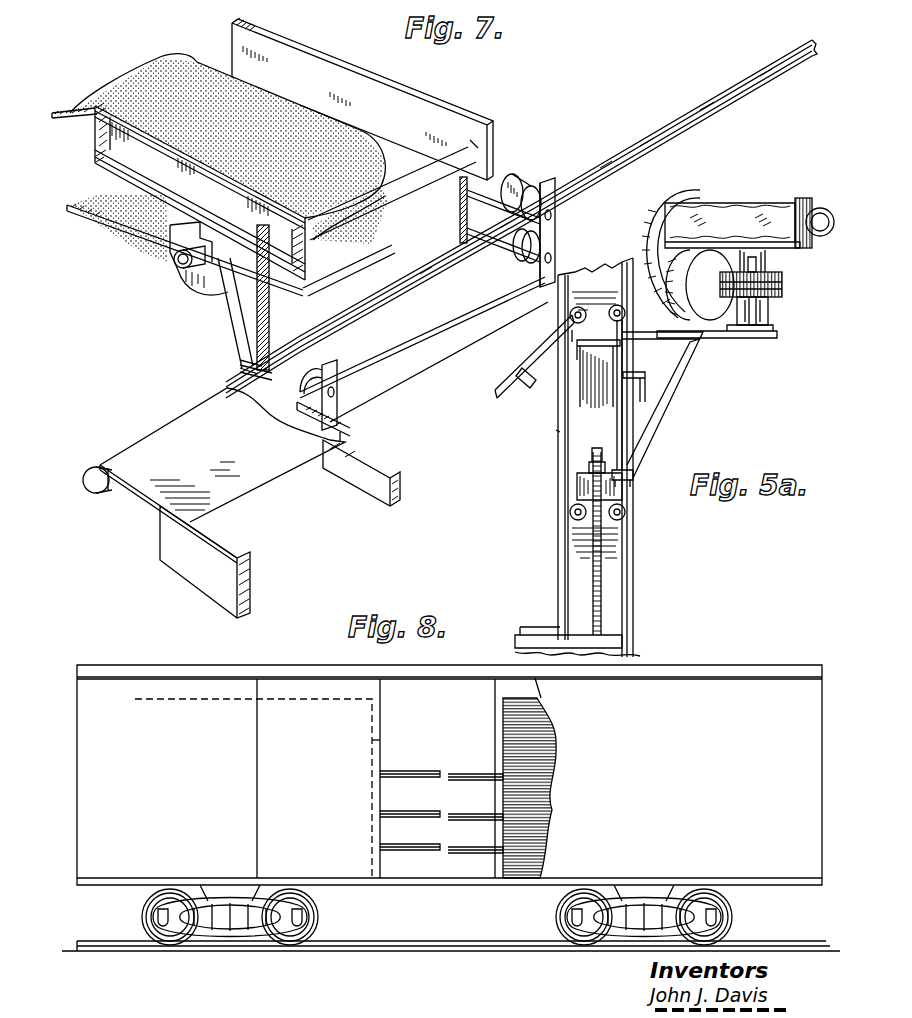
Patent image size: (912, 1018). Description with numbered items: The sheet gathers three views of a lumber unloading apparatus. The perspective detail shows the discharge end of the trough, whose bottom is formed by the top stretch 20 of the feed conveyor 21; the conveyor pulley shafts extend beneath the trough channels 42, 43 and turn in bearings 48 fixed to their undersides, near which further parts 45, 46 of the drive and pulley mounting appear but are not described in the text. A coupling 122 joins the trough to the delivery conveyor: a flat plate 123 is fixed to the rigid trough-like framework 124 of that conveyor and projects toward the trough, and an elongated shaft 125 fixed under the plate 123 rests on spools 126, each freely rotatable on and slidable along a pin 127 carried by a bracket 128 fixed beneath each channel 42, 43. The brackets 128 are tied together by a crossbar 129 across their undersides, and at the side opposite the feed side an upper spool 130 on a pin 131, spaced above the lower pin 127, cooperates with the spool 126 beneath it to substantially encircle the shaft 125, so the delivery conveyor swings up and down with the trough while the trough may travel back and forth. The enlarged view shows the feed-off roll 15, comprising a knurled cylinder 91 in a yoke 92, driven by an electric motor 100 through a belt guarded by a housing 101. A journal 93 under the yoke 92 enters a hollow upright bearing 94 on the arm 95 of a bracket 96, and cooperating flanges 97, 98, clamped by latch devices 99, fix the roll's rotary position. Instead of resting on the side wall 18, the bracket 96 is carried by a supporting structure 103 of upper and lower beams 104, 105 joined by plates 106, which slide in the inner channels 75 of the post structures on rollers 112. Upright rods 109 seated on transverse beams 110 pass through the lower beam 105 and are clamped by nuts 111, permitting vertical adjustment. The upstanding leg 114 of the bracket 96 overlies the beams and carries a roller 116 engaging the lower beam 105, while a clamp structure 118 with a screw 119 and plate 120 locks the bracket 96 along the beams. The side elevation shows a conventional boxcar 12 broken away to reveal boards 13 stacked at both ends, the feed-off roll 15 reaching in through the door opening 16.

In FIG. 8, the boxcar 12 is at (227, 687).
In FIG. 8, the boards 13 is at (370, 716).
In FIG. 5A, the feed-off roll 15 is at (760, 203).
In FIG. 8, the door opening 16 is at (380, 741).
In FIG. 5A, the side wall 18 is at (533, 353).
In FIG. 7, the top stretch 20 is at (192, 80).
In FIG. 7, the feed conveyor 21 is at (153, 100).
In FIG. 7, the channel 42 is at (99, 150).
In FIG. 7, the channel 43 is at (287, 58).
In FIG. 5A, the bracket 45 is at (523, 377).
In FIG. 7, the motor bracket 46 is at (198, 290).
In FIG. 7, the bearings 48 is at (176, 264).
In FIG. 5A, the inner channels 75 is at (623, 590).
In FIG. 5A, the cylinder 91 is at (722, 203).
In FIG. 5A, the yoke 92 is at (813, 200).
In FIG. 5A, the journal 93 is at (768, 267).
In FIG. 5A, the hollow upright bearing 94 is at (762, 317).
In FIG. 5A, the arm 95 is at (720, 339).
In FIG. 5A, the bracket 96 is at (683, 400).
In FIG. 5A, the horizontal flange 97 is at (783, 275).
In FIG. 5A, the horizontal flange 98 is at (783, 288).
In FIG. 5A, the latch devices 99 is at (750, 265).
In FIG. 5A, the electric motor 100 is at (683, 313).
In FIG. 5A, the housing 101 is at (670, 192).
In FIG. 5A, the supporting structure 103 is at (531, 441).
In FIG. 5A, the upper beam 104 is at (598, 373).
In FIG. 5A, the lower beam 105 is at (574, 482).
In FIG. 5A, the plates 106 is at (580, 408).
In FIG. 5A, the upright rods 109 is at (587, 570).
In FIG. 5A, the transverse beams 110 is at (523, 643).
In FIG. 5A, the nuts 111 is at (589, 470).
In FIG. 5A, the rollers 112 is at (570, 314).
In FIG. 5A, the upstanding leg 114 is at (620, 351).
In FIG. 5A, the roller 116 is at (634, 477).
In FIG. 5A, the clamp structure 118 is at (648, 384).
In FIG. 5A, the screw 119 is at (641, 370).
In FIG. 5A, the plate 120 is at (613, 392).
In FIG. 7, the coupling 122 is at (575, 106).
In FIG. 7, the flat plate 123 is at (147, 443).
In FIG. 7, the trough-like framework 124 is at (197, 574).
In FIG. 7, the shaft 125 is at (382, 306).
In FIG. 7, the spool 126 is at (550, 231).
In FIG. 7, the pin 127 is at (470, 225).
In FIG. 7, the bracket 128 is at (462, 203).
In FIG. 7, the crossbar 129 is at (415, 352).
In FIG. 7, the upper spool 130 is at (517, 197).
In FIG. 7, the pin 131 is at (507, 183).